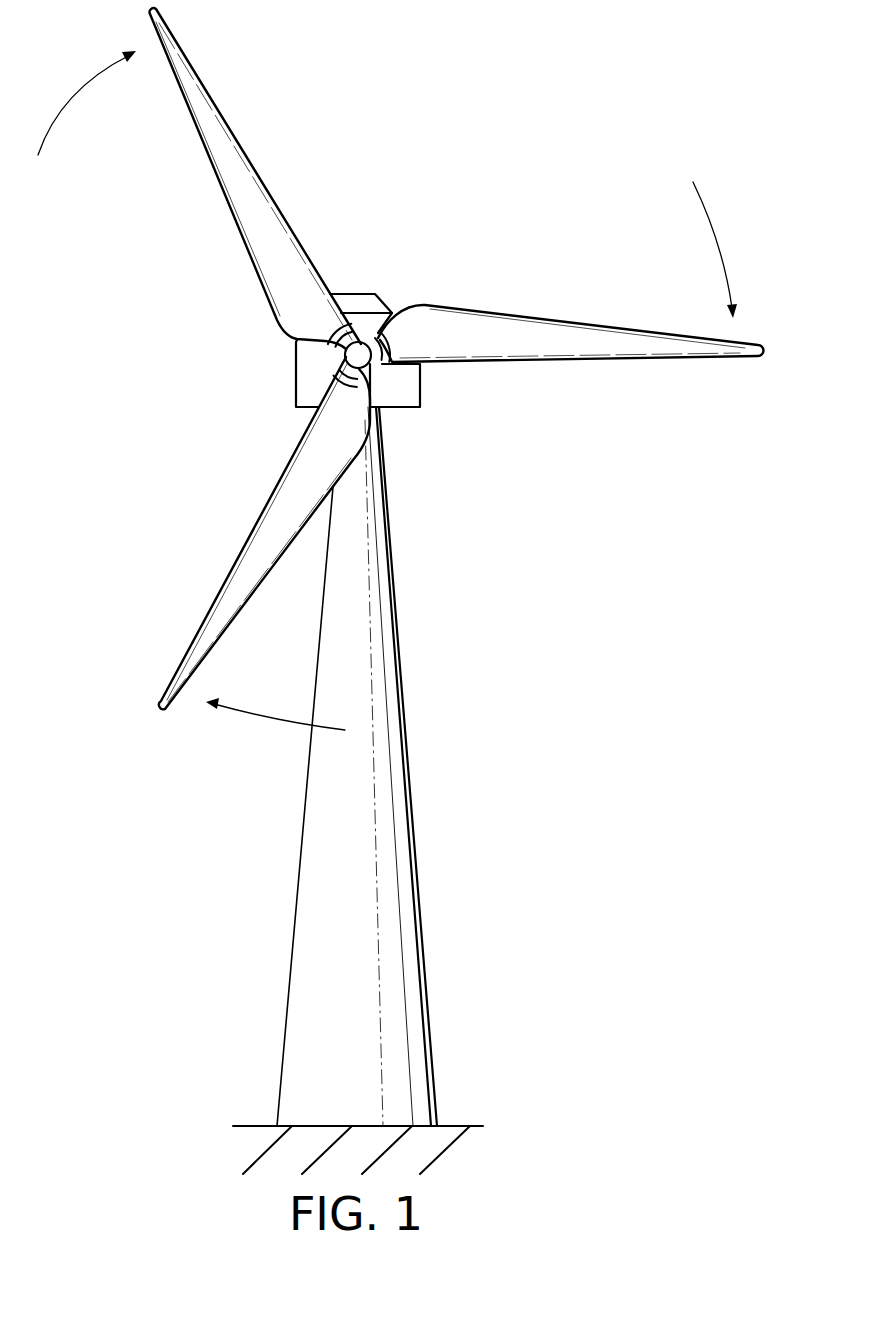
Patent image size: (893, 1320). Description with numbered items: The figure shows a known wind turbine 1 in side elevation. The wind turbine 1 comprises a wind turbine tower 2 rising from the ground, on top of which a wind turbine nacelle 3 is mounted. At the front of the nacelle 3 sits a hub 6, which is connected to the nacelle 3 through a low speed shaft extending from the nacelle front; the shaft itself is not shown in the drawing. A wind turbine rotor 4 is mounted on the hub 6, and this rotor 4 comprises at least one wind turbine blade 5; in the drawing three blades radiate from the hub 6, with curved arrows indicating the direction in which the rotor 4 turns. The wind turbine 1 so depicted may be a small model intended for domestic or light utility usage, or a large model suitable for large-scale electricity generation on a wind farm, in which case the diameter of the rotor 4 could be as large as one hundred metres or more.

The wind turbine 1 is at (577, 944).
The wind turbine tower 2 is at (412, 815).
The wind turbine nacelle 3 is at (415, 385).
The wind turbine rotor 4 is at (527, 148).
The wind turbine blade 5 is at (674, 340).
The hub 6 is at (358, 355).